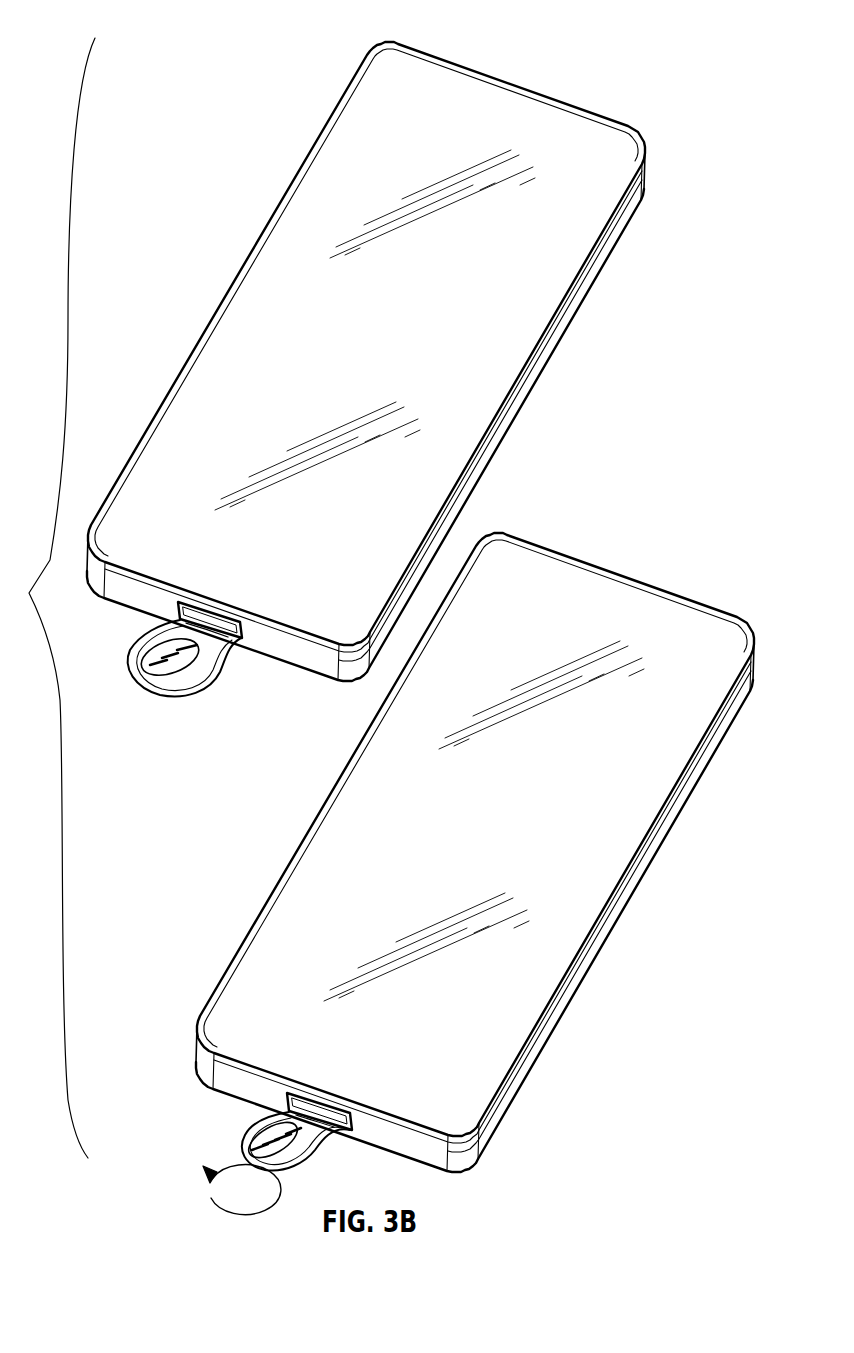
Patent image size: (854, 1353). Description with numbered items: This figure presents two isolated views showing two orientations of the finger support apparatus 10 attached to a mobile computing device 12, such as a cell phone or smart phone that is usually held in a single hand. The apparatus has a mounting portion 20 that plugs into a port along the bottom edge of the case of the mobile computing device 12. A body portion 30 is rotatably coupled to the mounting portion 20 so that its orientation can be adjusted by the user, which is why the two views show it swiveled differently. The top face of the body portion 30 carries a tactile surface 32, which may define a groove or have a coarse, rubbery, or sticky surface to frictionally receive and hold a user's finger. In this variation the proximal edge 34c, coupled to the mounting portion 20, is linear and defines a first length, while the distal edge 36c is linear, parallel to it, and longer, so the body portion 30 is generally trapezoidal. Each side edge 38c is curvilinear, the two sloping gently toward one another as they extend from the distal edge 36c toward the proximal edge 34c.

The finger support apparatus 10 is at (245, 863).
The mobile computing device 12 is at (537, 361).
The mounting portion 20 is at (186, 602).
The body portion 30 is at (232, 878).
The tactile surface 32 is at (150, 658).
The proximal edge 34c is at (216, 630).
The distal edge 36c is at (255, 908).
The side edge 38c is at (210, 677).